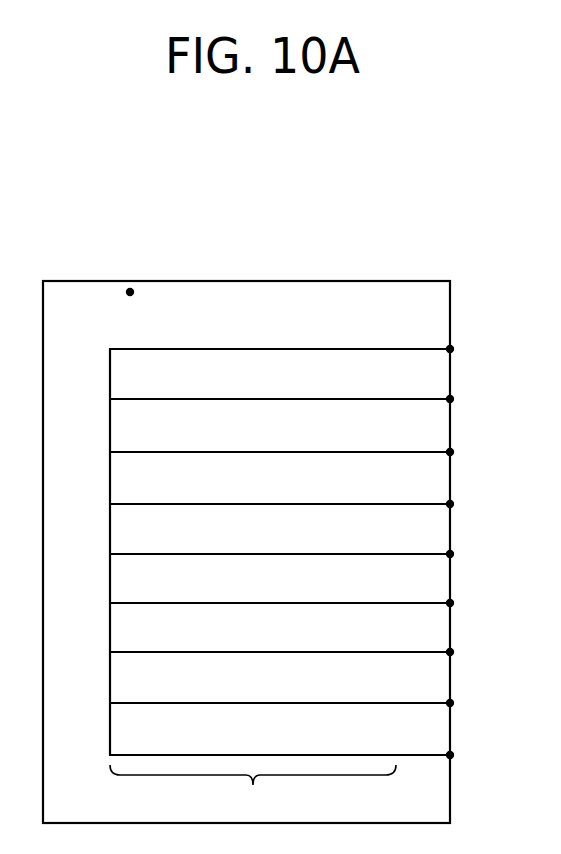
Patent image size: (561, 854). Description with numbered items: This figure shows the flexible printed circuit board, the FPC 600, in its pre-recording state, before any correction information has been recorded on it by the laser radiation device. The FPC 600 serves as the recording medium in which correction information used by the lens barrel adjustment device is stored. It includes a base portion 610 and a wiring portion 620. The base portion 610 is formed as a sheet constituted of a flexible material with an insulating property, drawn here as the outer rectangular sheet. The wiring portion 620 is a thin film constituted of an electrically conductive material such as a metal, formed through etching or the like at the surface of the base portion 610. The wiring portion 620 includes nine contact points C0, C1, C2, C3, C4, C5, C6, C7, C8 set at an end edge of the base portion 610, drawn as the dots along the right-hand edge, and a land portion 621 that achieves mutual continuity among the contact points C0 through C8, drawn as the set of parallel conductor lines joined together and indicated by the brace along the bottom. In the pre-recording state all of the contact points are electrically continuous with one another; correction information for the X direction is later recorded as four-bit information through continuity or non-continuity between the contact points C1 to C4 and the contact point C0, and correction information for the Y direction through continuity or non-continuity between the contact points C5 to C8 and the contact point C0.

The FPC 600 is at (240, 250).
The base portion 610 is at (129, 289).
The wiring portion 620 is at (333, 330).
The land portion 621 is at (253, 791).
The contact point C0 is at (450, 554).
The contact point C1 is at (450, 349).
The contact point C2 is at (450, 399).
The contact point C3 is at (450, 452).
The contact point C4 is at (450, 504).
The contact point C5 is at (450, 603).
The contact point C6 is at (450, 652).
The contact point C7 is at (450, 703).
The contact point C8 is at (450, 755).